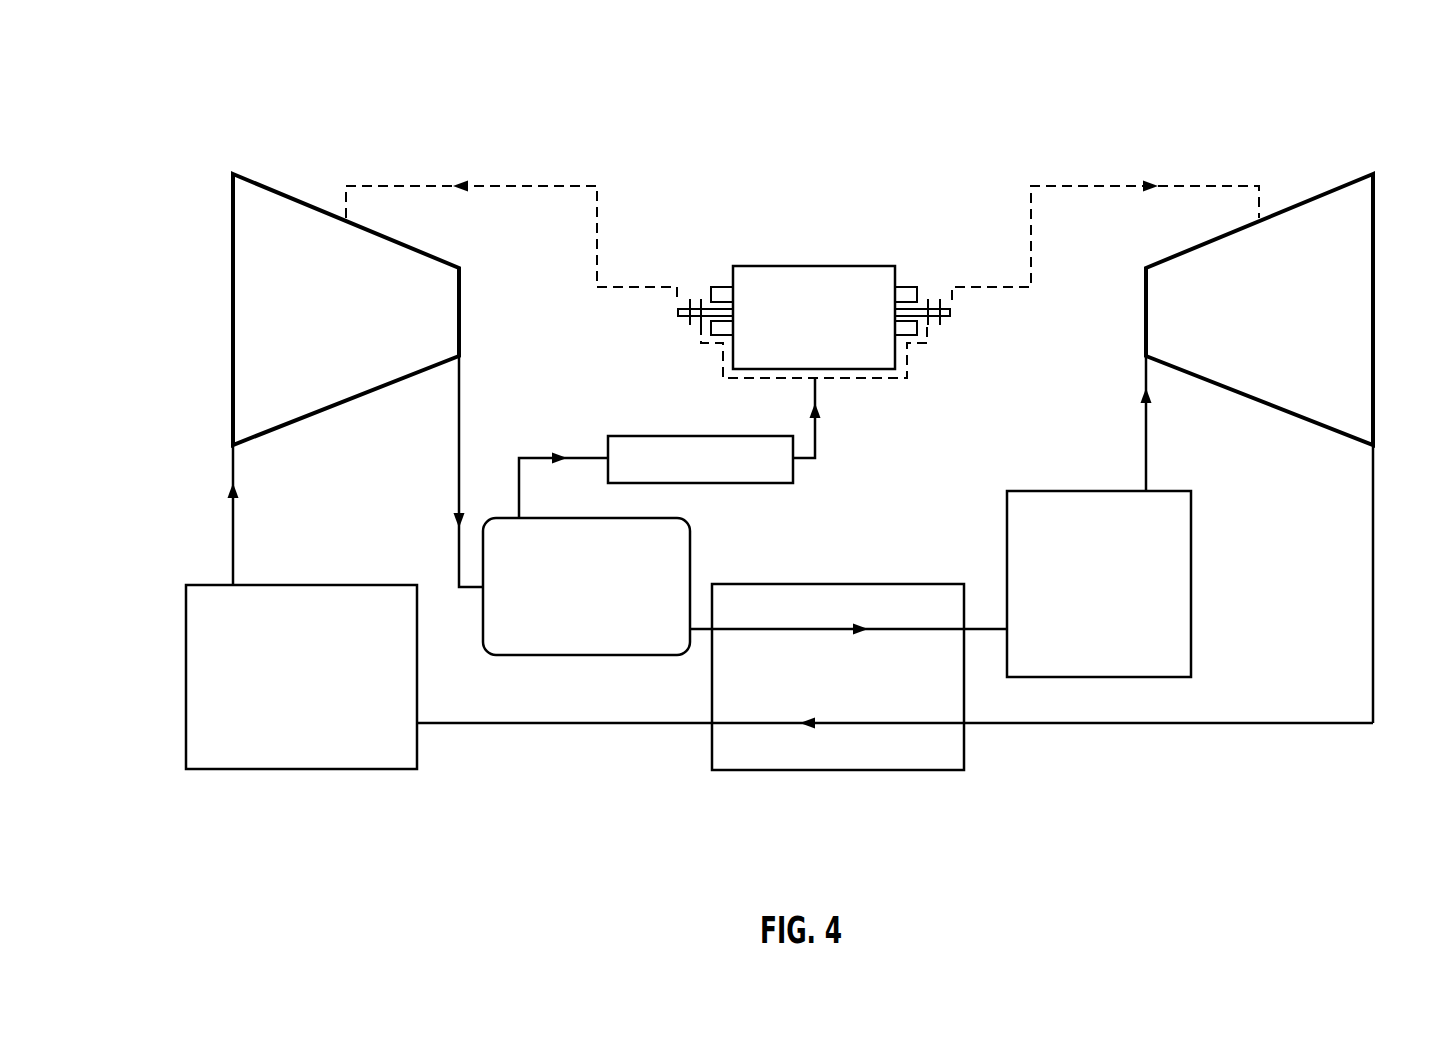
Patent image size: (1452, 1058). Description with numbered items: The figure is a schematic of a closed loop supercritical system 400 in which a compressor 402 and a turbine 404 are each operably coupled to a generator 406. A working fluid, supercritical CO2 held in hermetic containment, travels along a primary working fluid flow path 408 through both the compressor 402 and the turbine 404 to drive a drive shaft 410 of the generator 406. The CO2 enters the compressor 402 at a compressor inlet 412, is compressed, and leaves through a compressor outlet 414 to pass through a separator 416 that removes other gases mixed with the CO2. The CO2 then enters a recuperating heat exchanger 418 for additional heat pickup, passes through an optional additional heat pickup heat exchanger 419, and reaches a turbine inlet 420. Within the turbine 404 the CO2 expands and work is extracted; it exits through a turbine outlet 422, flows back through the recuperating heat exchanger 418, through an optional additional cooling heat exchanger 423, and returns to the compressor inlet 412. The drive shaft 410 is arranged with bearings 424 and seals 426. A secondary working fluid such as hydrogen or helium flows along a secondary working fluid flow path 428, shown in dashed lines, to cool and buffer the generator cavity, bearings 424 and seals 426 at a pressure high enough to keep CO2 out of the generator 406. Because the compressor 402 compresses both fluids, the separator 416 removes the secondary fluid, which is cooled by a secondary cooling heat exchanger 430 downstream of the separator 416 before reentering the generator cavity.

The closed loop supercritical system 400 is at (163, 80).
The compressor 402 is at (263, 203).
The turbine 404 is at (1335, 205).
The generator 406 is at (798, 288).
The primary working fluid flow path 408 is at (618, 723).
The drive shaft 410 is at (895, 312).
The compressor inlet 412 is at (233, 445).
The compressor outlet 414 is at (460, 356).
The separator 416 is at (557, 657).
The recuperating heat exchanger 418 is at (893, 770).
The additional heat pickup heat exchanger 419 is at (1082, 491).
The turbine inlet 420 is at (1145, 357).
The turbine outlet 422 is at (1375, 445).
The additional cooling heat exchanger 423 is at (347, 585).
The bearings 424 is at (723, 287).
The seals 426 is at (690, 322).
The secondary working fluid flow path 428 is at (505, 183).
The secondary cooling heat exchanger 430 is at (680, 436).